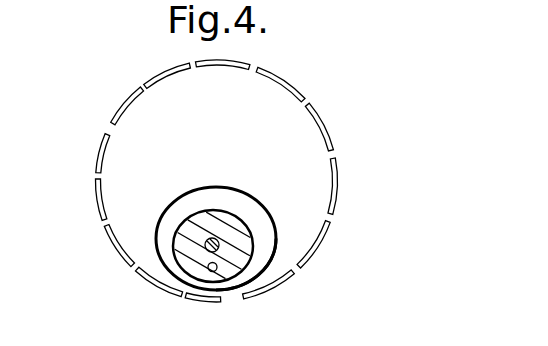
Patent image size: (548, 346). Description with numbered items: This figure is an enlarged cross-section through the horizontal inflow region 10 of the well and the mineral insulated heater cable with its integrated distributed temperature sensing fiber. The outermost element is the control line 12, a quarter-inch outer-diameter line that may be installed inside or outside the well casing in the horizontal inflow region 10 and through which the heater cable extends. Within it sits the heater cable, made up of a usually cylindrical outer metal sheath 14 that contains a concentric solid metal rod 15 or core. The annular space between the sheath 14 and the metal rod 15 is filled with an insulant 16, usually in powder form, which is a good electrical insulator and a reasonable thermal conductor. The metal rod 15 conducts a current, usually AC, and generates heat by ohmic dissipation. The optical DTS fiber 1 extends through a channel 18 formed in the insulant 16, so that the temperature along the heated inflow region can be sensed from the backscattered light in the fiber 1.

The optical DTS fiber 1 is at (218, 264).
The horizontal inflow region 10 is at (196, 181).
The control line 12 is at (276, 238).
The outer metal sheath 14 is at (262, 271).
The solid metal rod 15 is at (205, 250).
The insulant 16 is at (170, 248).
The channel 18 is at (214, 272).